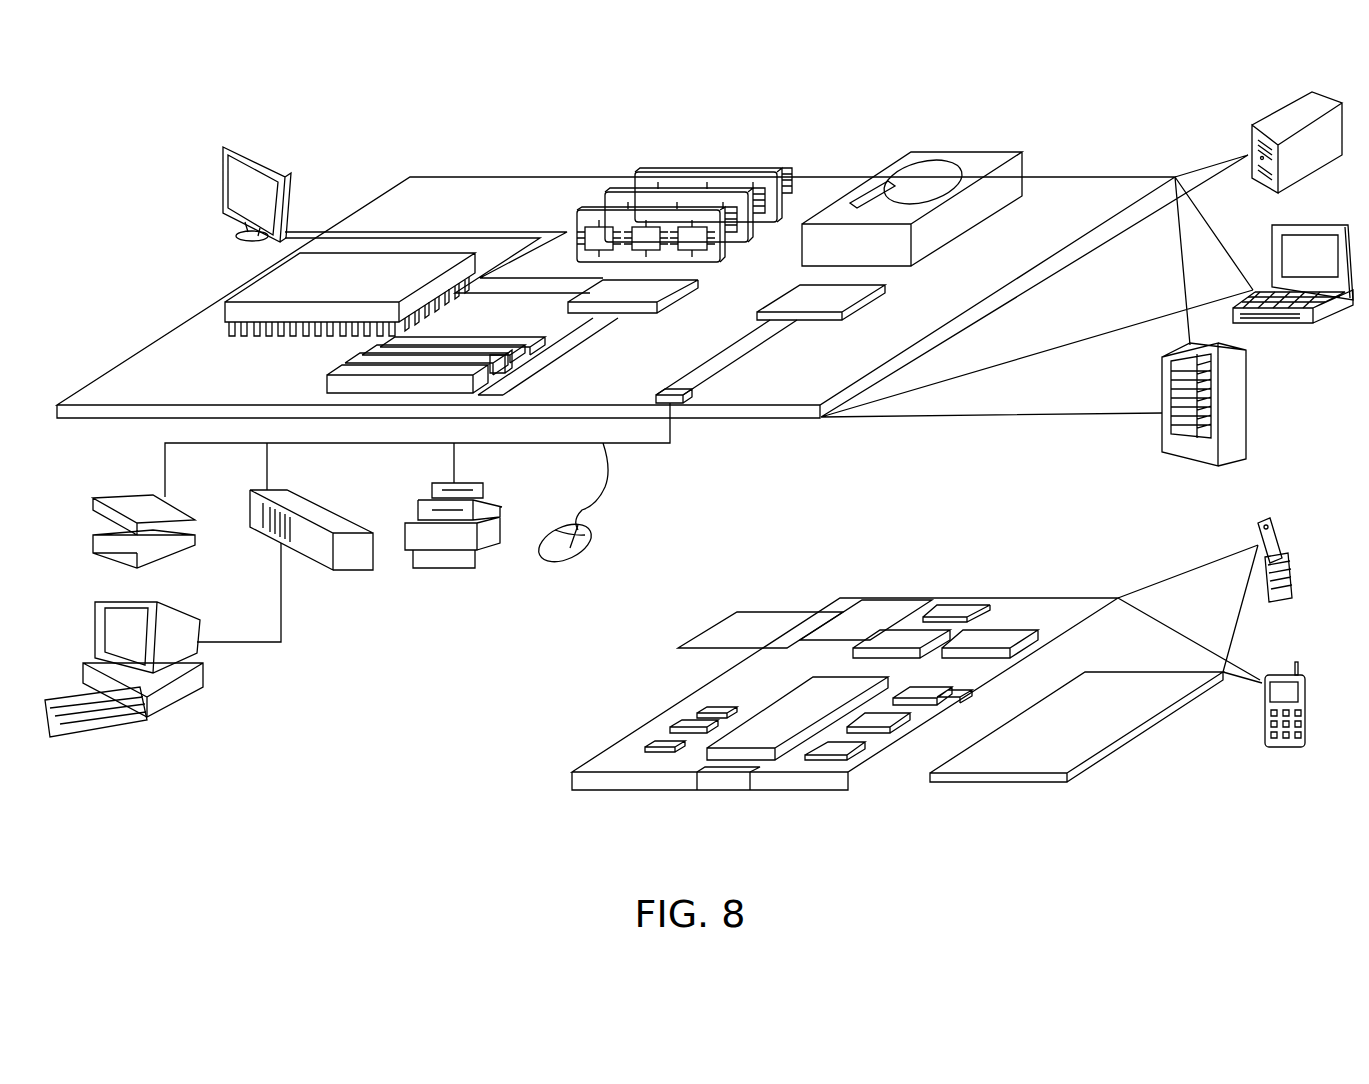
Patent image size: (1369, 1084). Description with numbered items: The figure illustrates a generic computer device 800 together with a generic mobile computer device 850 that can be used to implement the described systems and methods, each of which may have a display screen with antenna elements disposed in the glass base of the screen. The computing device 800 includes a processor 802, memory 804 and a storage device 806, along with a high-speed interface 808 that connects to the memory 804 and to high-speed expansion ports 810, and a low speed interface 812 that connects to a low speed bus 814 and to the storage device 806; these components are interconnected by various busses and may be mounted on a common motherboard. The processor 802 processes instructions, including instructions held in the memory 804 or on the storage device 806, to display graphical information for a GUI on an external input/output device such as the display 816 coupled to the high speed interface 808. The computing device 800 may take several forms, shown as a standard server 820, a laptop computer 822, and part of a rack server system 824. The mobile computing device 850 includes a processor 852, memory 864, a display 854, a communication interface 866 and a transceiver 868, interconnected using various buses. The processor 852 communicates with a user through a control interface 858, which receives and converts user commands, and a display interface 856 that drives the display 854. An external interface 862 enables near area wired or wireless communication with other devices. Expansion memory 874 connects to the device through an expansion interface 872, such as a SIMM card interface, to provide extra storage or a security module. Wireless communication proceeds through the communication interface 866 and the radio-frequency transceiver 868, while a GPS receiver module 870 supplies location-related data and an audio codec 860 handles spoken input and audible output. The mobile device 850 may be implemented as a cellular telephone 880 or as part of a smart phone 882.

The computer device 800 is at (360, 125).
The processor 802 is at (250, 283).
The memory 804 is at (715, 168).
The storage device 806 is at (947, 150).
The high-speed interface 808 is at (644, 287).
The high-speed expansion ports 810 is at (352, 363).
The low speed interface 812 is at (792, 292).
The low speed bus 814 is at (676, 392).
The display 816 is at (226, 145).
The standard server 820 is at (1271, 118).
The laptop computer 822 is at (1333, 224).
The rack server system 824 is at (1246, 405).
The mobile computer device 850 is at (528, 797).
The processor 852 is at (763, 718).
The display 854 is at (1117, 690).
The display interface 856 is at (867, 757).
The control interface 858 is at (887, 722).
The audio codec 860 is at (925, 682).
The external interface 862 is at (725, 781).
The memory 864 is at (675, 725).
The communication interface 866 is at (900, 628).
The transceiver 868 is at (1000, 627).
The GPS receiver module 870 is at (957, 605).
The expansion interface 872 is at (827, 608).
The expansion memory 874 is at (738, 610).
The cellular telephone 880 is at (1265, 520).
The smart phone 882 is at (1279, 675).